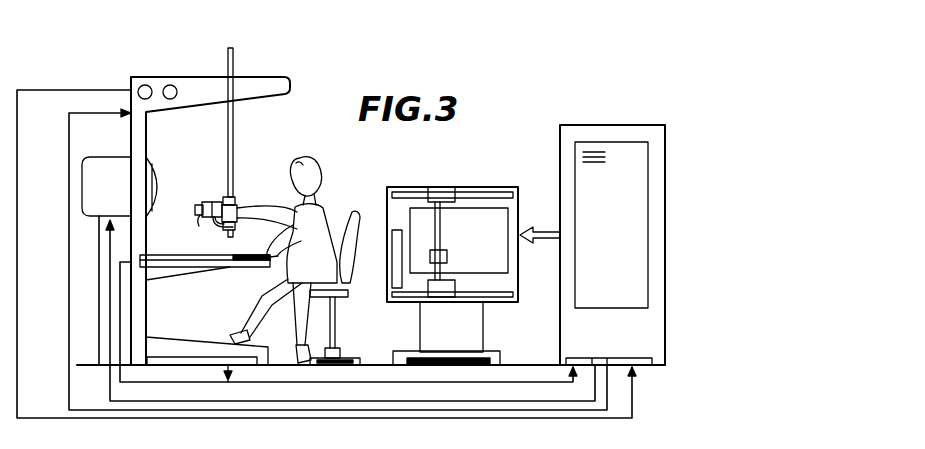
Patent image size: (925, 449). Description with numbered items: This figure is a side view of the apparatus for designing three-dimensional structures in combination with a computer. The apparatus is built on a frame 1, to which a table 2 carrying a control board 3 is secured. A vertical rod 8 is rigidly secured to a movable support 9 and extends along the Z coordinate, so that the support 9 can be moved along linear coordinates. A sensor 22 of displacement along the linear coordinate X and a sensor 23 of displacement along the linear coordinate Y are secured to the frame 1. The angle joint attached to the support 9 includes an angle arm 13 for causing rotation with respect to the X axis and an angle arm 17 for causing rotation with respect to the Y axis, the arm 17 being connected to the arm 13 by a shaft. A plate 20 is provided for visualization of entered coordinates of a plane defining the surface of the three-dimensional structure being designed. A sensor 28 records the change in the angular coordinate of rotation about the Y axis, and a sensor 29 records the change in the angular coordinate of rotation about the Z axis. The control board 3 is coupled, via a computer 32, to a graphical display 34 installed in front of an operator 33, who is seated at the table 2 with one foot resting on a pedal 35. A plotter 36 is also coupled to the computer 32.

The frame 1 is at (254, 76).
The table 2 is at (228, 268).
The control board 3 is at (240, 240).
The vertical rod 8 is at (234, 118).
The movable support 9 is at (234, 195).
The angle arm 13 is at (219, 201).
The angle arm 17 is at (197, 223).
The plate 20 is at (243, 205).
The sensor of displacement along linear coordinate X 22 is at (173, 85).
The sensor of displacement along linear coordinate Y 23 is at (148, 85).
The sensor for recording change in angular coordinate of rotation about Y axis 28 is at (196, 205).
The sensor for recording change in angular coordinate of rotation about Z axis 29 is at (225, 231).
The computer 32 is at (560, 151).
The operator 33 is at (326, 218).
The graphical display 34 is at (152, 158).
The pedal 35 is at (220, 334).
The plotter 36 is at (506, 222).